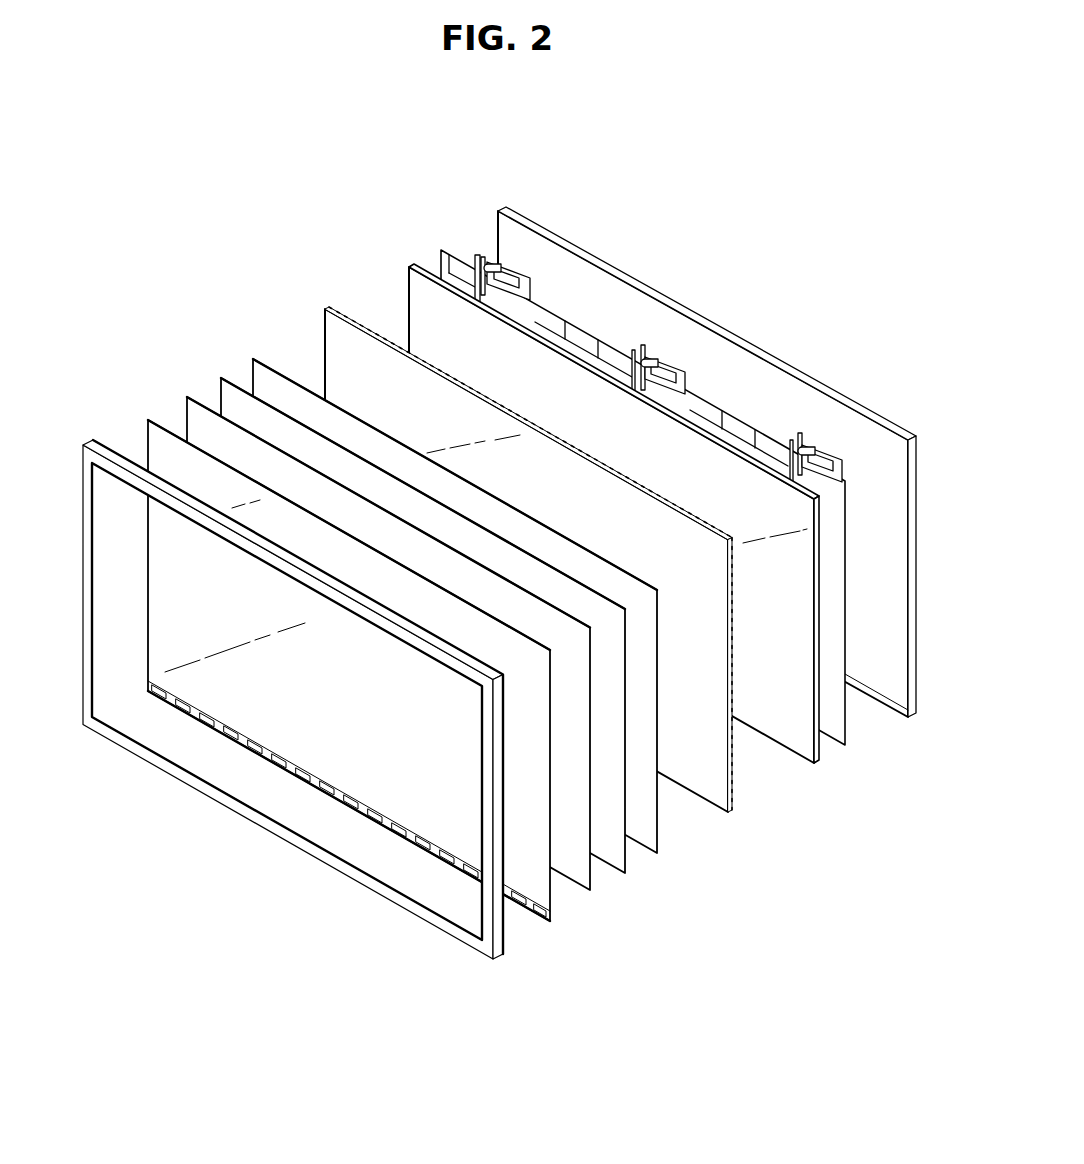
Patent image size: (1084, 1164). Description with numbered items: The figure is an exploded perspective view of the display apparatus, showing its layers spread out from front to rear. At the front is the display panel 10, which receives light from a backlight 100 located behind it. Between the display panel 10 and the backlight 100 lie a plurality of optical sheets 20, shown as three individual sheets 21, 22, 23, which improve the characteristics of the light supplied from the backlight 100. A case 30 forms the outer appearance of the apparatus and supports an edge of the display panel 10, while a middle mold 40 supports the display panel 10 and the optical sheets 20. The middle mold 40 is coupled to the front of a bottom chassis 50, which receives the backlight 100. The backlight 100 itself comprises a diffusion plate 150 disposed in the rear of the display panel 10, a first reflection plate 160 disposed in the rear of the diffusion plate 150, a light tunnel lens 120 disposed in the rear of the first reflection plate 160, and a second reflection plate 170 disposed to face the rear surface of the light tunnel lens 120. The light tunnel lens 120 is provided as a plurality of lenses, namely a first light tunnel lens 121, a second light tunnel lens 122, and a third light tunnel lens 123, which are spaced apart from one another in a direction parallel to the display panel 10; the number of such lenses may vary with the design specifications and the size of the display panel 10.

The display panel 10 is at (562, 911).
The optical sheets 20 is at (457, 664).
The optical sheet 21 is at (648, 810).
The optical sheet 22 is at (612, 818).
The optical sheet 23 is at (577, 836).
The case 30 is at (498, 933).
The middle mold 40 is at (734, 778).
The bottom chassis 50 is at (878, 423).
The backlight 100 is at (627, 434).
The light tunnel lens 120 is at (658, 316).
The first light tunnel lens 121 is at (807, 450).
The second light tunnel lens 122 is at (650, 362).
The third light tunnel lens 123 is at (494, 270).
The diffusion plate 150 is at (450, 313).
The first reflection plate 160 is at (445, 265).
The second reflection plate 170 is at (823, 448).